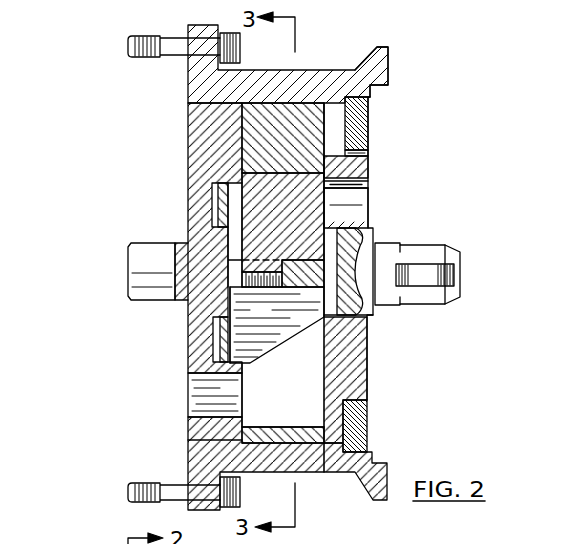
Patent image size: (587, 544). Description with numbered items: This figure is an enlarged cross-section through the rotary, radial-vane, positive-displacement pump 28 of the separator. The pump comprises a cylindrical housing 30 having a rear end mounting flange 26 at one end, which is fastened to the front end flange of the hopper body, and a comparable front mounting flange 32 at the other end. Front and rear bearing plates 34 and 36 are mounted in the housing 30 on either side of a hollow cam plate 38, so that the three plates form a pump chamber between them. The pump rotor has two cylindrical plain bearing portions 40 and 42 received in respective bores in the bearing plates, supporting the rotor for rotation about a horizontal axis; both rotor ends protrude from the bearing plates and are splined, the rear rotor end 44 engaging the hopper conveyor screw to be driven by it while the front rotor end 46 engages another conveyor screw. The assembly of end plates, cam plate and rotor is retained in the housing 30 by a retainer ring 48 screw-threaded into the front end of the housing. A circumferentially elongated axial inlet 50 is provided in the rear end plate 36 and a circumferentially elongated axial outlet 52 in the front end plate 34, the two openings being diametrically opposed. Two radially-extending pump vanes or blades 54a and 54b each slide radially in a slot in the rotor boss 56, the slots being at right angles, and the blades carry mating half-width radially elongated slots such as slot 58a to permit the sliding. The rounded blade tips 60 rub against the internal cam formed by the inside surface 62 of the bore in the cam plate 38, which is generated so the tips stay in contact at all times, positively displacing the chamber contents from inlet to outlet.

The rear end mounting flange 26 is at (205, 465).
The positive-displacement pump 28 is at (118, 162).
The cylindrical housing 30 is at (322, 82).
The front mounting flange 32 is at (380, 57).
The front bearing plate 34 is at (350, 360).
The rear bearing plate 36 is at (242, 130).
The hollow cam plate 38 is at (368, 108).
The cylindrical plain bearing portion 40 is at (202, 223).
The cylindrical plain bearing portion 42 is at (353, 323).
The rear rotor end 44 is at (157, 252).
The front rotor end 46 is at (422, 257).
The retainer ring 48 is at (353, 422).
The axial inlet 50 is at (202, 397).
The axial outlet 52 is at (343, 212).
The pump vane 54a is at (338, 192).
The pump vane 54b is at (310, 280).
The rotor boss 56 is at (263, 342).
The half-width radially elongated slot 58a is at (263, 287).
The blade tips 60 is at (368, 148).
The inside surface 62 is at (368, 172).